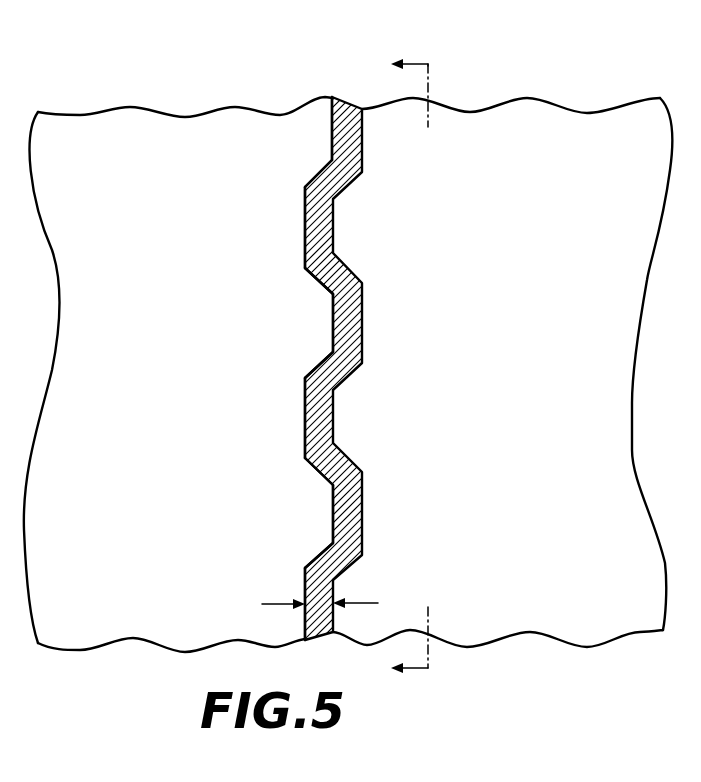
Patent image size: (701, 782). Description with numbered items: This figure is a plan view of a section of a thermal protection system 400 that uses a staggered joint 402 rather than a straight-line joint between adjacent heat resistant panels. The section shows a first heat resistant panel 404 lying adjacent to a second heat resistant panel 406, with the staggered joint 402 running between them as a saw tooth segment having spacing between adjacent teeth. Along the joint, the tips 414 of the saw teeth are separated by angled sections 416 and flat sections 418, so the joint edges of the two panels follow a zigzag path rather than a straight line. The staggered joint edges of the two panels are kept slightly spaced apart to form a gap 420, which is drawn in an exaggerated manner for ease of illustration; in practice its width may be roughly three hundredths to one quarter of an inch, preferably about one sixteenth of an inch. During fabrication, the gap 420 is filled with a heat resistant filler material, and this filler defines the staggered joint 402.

The thermal protection system 400 is at (180, 72).
The staggered joint 402 is at (325, 222).
The first heat resistant panel 404 is at (154, 371).
The second heat resistant panel 406 is at (520, 358).
The tips of the saw teeth 414 is at (333, 140).
The angled sections 416 is at (318, 174).
The flat sections 418 is at (305, 228).
The gap 420 is at (357, 603).